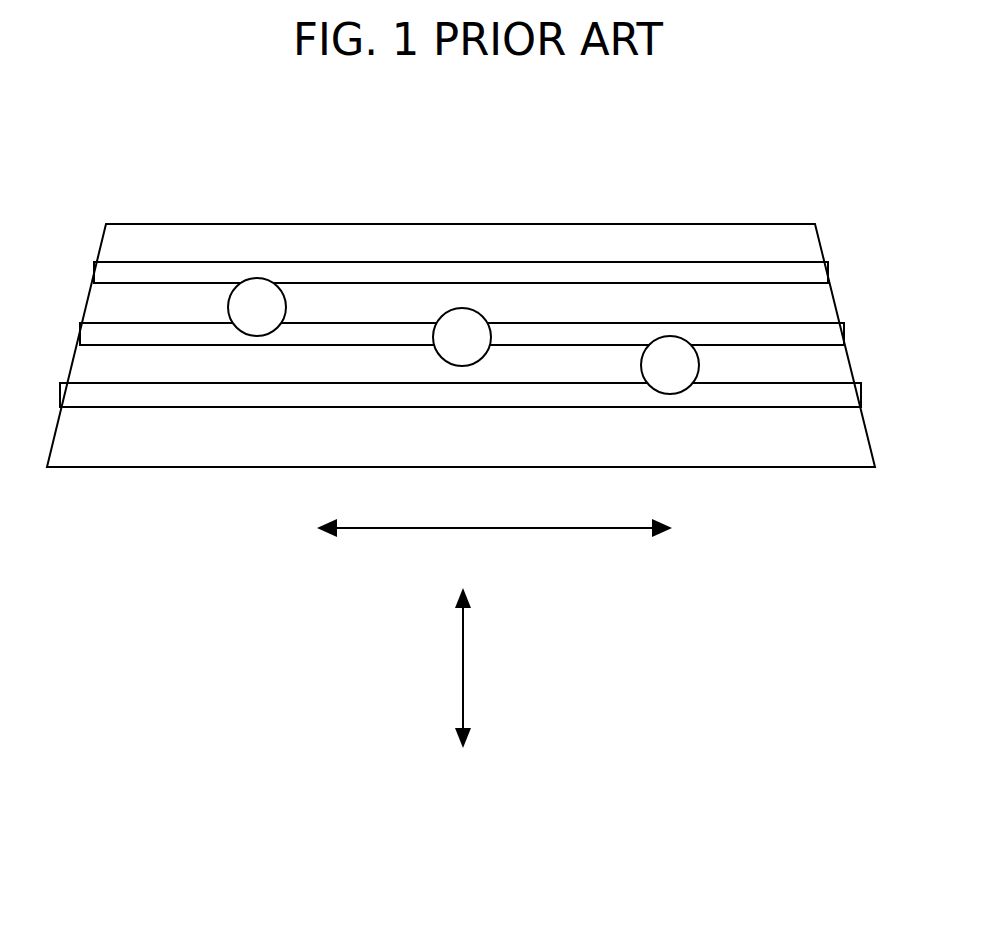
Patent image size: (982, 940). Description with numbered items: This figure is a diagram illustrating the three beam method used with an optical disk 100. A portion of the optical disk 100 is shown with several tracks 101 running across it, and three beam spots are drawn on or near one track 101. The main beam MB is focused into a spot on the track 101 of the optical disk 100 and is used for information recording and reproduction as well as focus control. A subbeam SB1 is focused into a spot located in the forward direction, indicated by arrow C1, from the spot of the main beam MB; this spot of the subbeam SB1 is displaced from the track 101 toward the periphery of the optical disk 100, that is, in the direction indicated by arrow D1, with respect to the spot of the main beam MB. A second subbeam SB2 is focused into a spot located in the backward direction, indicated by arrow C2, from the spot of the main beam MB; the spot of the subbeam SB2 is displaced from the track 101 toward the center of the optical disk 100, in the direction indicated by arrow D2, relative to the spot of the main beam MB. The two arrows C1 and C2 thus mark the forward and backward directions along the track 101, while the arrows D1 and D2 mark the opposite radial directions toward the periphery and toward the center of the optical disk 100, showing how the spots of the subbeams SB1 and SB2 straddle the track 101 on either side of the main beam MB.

The optical disk 100 is at (143, 449).
The track 101 is at (753, 270).
The subbeam SB1 is at (255, 305).
The main beam MB is at (461, 332).
The subbeam SB2 is at (668, 372).
The arrow C1 is at (458, 528).
The arrow C2 is at (686, 528).
The arrow D1 is at (474, 640).
The arrow D2 is at (474, 757).